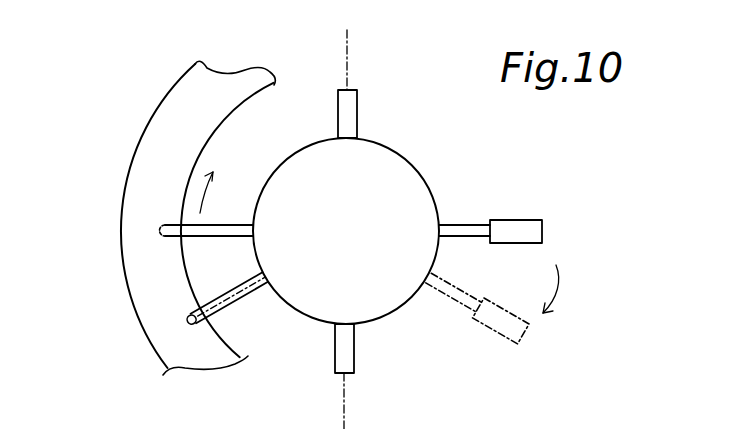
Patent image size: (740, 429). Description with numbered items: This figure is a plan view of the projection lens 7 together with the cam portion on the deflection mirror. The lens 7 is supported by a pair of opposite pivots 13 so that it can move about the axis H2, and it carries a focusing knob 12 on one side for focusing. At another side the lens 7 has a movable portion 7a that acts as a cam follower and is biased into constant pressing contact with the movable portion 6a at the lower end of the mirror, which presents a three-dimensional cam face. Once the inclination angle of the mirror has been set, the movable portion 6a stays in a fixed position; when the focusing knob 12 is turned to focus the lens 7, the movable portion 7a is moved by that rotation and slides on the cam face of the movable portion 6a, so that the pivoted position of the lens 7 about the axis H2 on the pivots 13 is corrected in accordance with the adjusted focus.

The movable portion 6a is at (133, 183).
The projection lens 7 is at (402, 148).
The movable portion 7a is at (233, 151).
The focusing knob 12 is at (515, 220).
The pivots 13 is at (357, 108).
The axis H2 is at (342, 387).